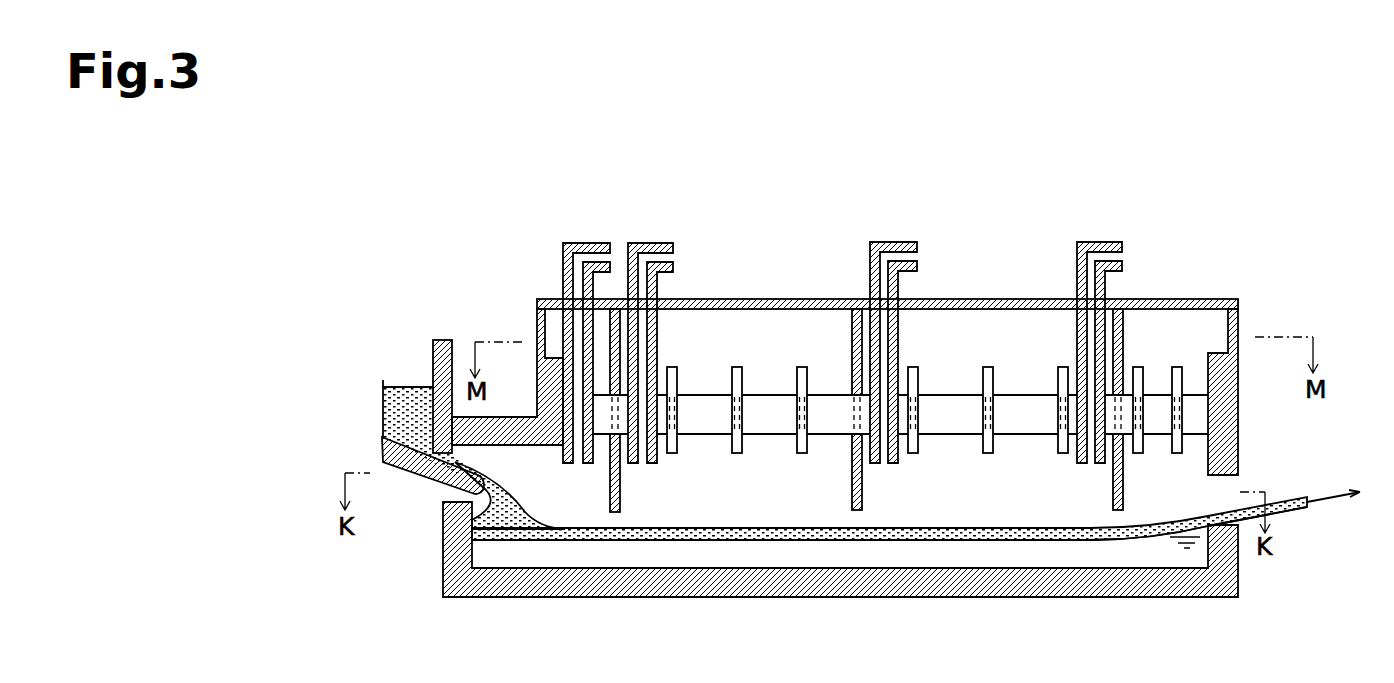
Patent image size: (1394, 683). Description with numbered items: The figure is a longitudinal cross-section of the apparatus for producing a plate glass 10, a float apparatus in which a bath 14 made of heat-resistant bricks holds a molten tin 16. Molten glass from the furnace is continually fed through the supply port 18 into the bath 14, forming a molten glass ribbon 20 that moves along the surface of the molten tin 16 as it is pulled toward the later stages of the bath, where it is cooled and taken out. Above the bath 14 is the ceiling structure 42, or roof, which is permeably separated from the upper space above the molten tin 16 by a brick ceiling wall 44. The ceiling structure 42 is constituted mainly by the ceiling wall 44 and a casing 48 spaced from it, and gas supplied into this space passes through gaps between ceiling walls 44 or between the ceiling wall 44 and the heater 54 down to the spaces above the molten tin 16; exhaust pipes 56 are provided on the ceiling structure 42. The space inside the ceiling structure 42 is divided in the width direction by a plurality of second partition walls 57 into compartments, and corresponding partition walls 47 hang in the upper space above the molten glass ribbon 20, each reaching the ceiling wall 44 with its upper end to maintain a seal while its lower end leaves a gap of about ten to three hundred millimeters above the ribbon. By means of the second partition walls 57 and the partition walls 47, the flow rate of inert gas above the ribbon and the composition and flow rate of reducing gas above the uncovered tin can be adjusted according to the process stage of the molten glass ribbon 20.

The apparatus for producing a plate glass 10 is at (1188, 252).
The bath 14 is at (1246, 572).
The molten tin 16 is at (724, 553).
The supply port 18 is at (456, 480).
The molten glass ribbon 20 is at (953, 553).
The ceiling structure 42 is at (537, 440).
The ceiling wall 44 is at (826, 400).
The partition wall 47 is at (609, 510).
The casing 48 is at (990, 299).
The heater 54 is at (731, 381).
The exhaust pipe 56 is at (573, 243).
The second partition wall 57 is at (612, 312).